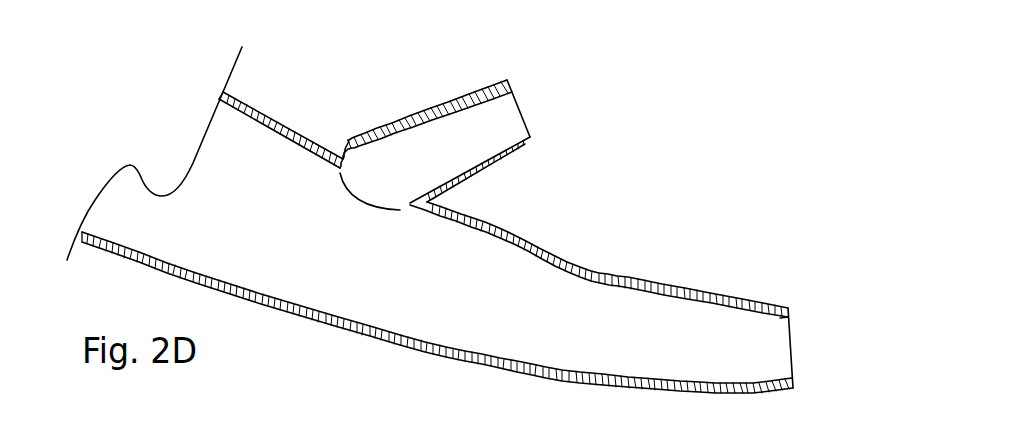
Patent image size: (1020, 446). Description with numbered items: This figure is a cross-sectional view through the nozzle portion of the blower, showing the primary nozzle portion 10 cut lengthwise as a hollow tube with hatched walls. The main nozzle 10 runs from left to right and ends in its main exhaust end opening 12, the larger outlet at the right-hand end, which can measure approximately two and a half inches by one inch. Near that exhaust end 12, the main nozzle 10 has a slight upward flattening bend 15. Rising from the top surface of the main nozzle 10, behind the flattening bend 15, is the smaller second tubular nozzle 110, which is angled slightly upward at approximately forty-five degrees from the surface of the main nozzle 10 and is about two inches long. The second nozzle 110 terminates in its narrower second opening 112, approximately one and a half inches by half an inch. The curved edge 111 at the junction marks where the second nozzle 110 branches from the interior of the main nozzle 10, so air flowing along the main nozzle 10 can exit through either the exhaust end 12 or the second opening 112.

The primary nozzle portion 10 is at (272, 112).
The second tubular nozzle 110 is at (465, 95).
The curved inner edge at branch junction 111 is at (362, 207).
The second opening 112 is at (517, 92).
The upward bend 15 is at (643, 280).
The main exhaust end opening 12 is at (790, 308).